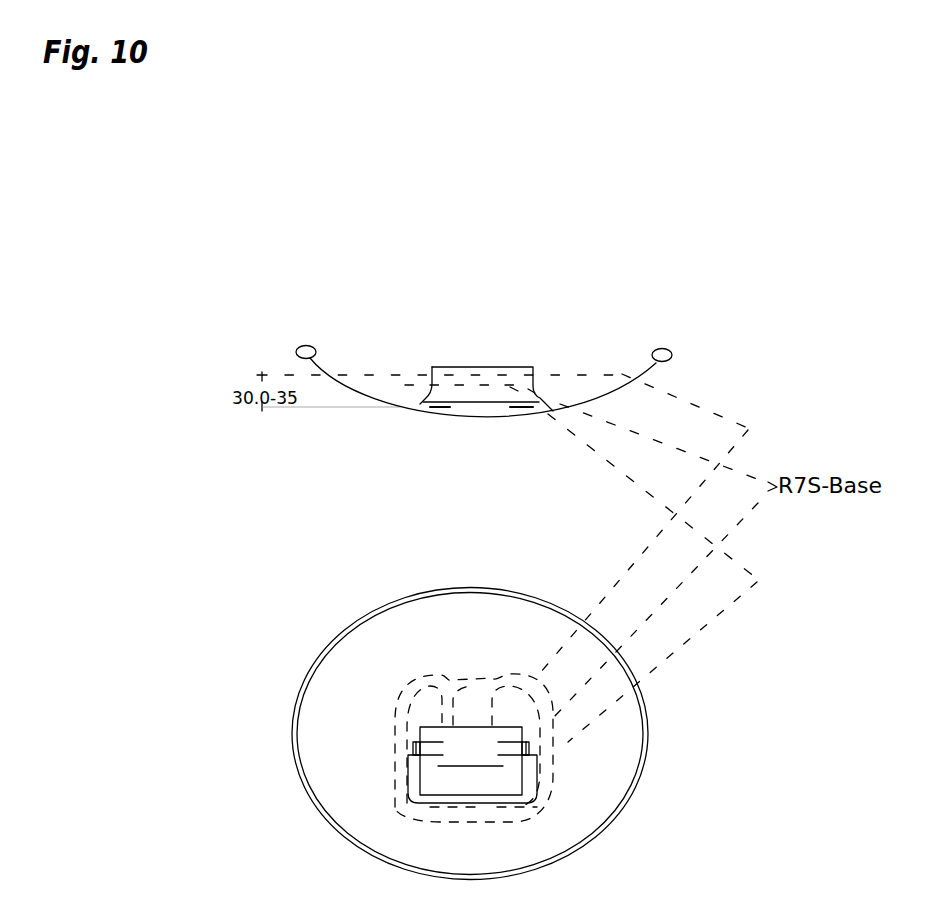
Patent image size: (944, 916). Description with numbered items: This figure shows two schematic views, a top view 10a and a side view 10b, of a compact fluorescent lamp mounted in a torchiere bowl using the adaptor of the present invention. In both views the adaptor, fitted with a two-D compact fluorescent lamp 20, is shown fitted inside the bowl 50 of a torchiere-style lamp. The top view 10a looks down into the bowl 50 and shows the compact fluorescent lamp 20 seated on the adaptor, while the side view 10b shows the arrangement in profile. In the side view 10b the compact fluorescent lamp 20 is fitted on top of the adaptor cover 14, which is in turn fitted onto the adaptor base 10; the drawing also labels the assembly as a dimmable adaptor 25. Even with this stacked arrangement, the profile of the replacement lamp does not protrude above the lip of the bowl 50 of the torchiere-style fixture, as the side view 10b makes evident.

The adaptor base 10 is at (540, 397).
The top view 10a is at (328, 647).
The side view 10b is at (297, 352).
The adaptor cover 14 is at (535, 368).
The bowl 50 is at (655, 376).
The 2D compact fluorescent lamp 20 is at (636, 598).
The dimmable adaptor 25 is at (658, 604).